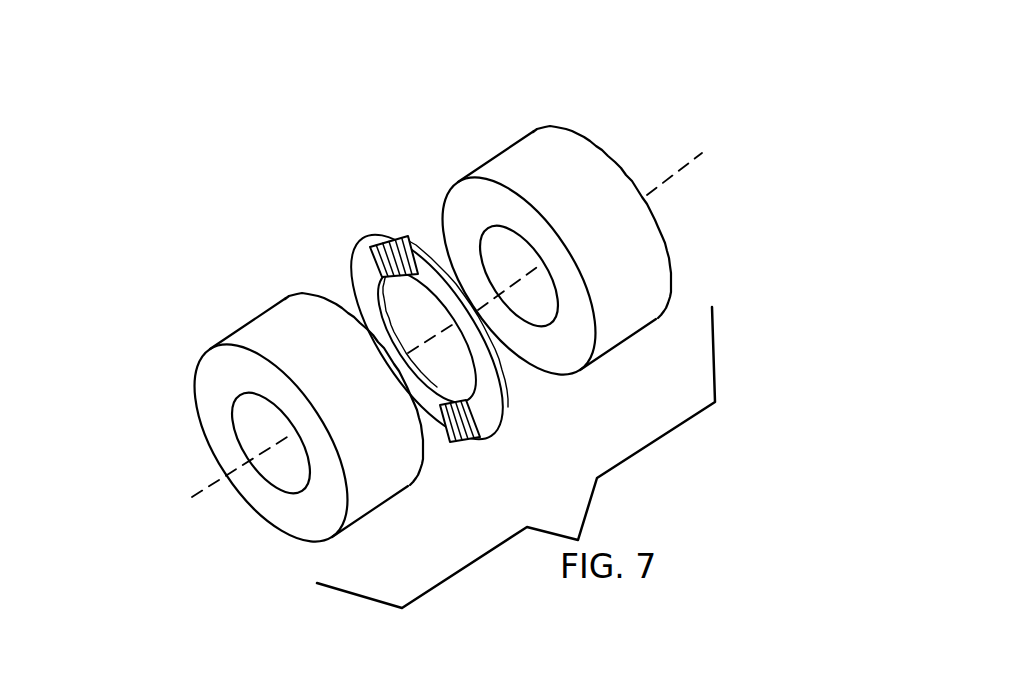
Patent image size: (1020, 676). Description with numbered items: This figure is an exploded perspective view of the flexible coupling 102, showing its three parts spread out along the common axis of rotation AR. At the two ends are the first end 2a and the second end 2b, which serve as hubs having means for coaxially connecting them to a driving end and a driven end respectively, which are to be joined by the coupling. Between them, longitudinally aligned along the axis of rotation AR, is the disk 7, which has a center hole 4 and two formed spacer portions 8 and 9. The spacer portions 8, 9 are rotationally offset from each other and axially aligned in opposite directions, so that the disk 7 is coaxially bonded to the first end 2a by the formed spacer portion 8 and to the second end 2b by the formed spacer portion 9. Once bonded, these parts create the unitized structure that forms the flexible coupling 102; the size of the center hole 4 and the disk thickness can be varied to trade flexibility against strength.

The first end 2a is at (537, 148).
The second end 2b is at (257, 332).
The disk 7 is at (432, 311).
The formed spacer portion 8 is at (399, 222).
The formed spacer portion 9 is at (452, 432).
The center hole 4 is at (437, 353).
The flexible coupling 102 is at (682, 251).
The axis of rotation AR is at (222, 468).